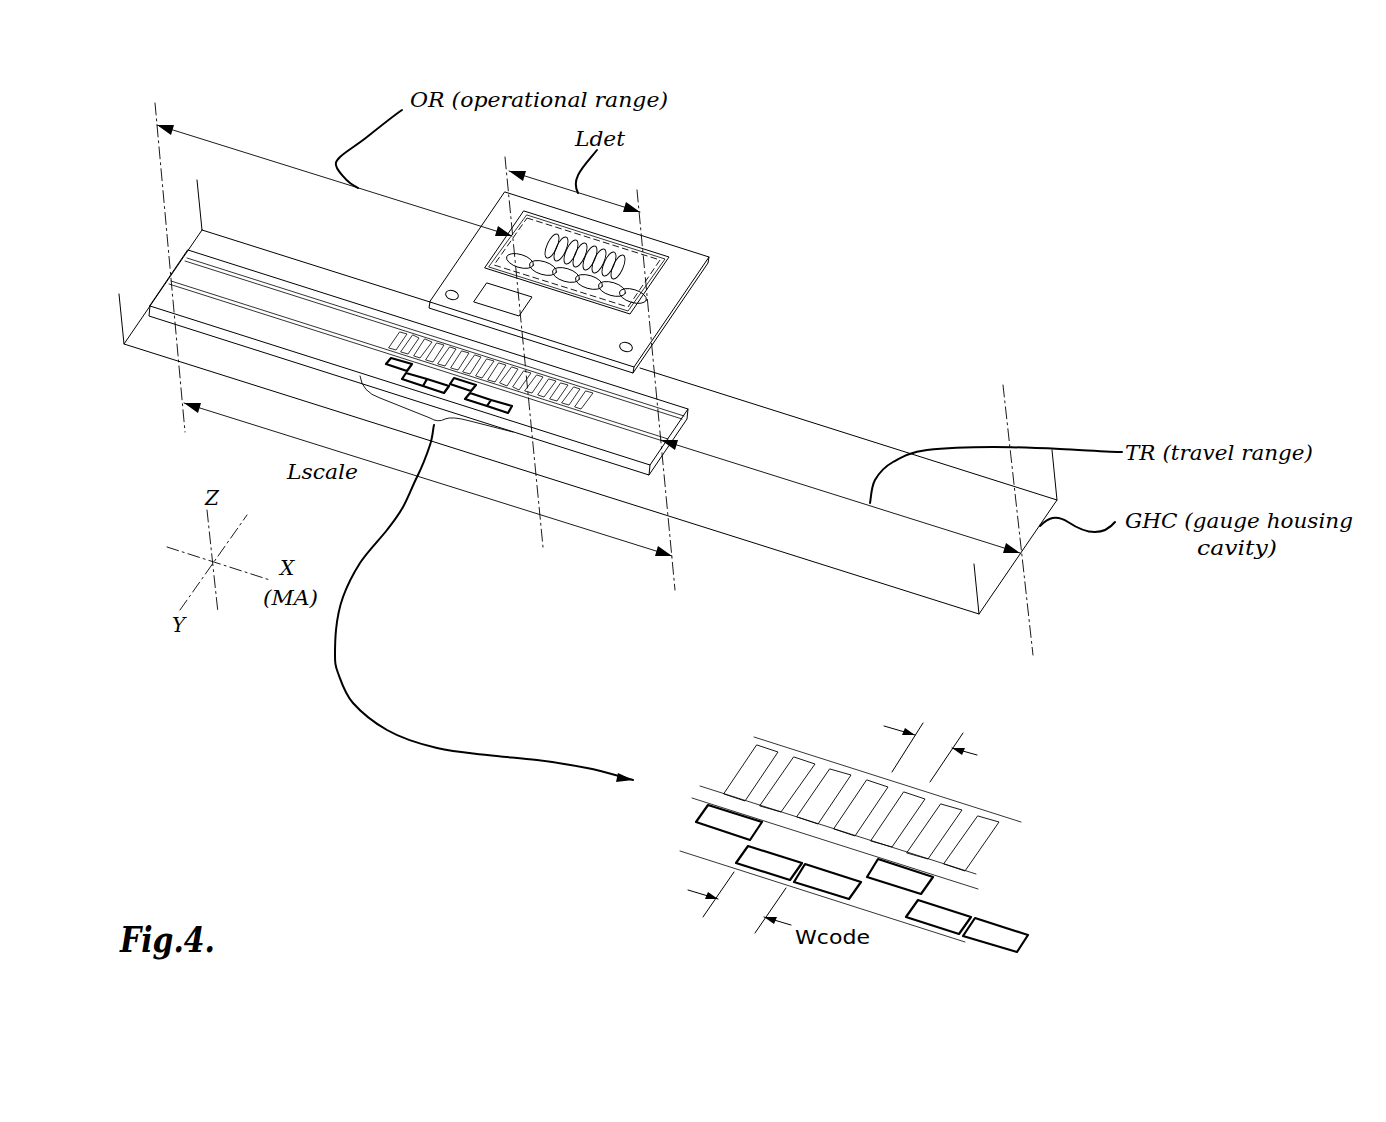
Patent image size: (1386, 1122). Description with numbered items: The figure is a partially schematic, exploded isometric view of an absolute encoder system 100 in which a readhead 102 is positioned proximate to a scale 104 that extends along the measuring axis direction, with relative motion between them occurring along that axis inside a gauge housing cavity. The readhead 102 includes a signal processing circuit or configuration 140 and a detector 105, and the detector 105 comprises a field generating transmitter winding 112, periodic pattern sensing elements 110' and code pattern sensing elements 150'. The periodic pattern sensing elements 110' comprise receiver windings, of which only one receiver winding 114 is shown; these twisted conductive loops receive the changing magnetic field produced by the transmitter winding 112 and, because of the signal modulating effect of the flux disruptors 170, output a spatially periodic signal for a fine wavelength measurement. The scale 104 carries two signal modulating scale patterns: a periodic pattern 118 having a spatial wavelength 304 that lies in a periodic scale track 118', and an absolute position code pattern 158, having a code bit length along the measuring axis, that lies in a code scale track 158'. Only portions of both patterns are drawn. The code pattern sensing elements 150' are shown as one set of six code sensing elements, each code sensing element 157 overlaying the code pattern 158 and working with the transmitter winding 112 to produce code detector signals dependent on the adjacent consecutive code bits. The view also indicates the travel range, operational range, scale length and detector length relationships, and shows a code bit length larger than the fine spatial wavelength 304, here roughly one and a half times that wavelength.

The absolute encoder system 100 is at (313, 120).
The readhead 102 is at (692, 270).
The scale 104 is at (685, 460).
The detector 105 is at (685, 262).
The periodic pattern sensing elements 110' is at (868, 325).
The field generating transmitter winding 112 is at (632, 268).
The receiver winding 114 is at (625, 259).
The periodic pattern 118 is at (824, 594).
The periodic scale track 118' is at (841, 803).
The signal processing circuit or configuration 140 is at (503, 298).
The code pattern sensing elements 150' is at (704, 344).
The code sensing element 157 is at (507, 260).
The absolute position code pattern 158 is at (799, 646).
The code scale track 158' is at (825, 875).
The flux disruptor 170 is at (758, 752).
The spatial wavelength 304 is at (979, 752).